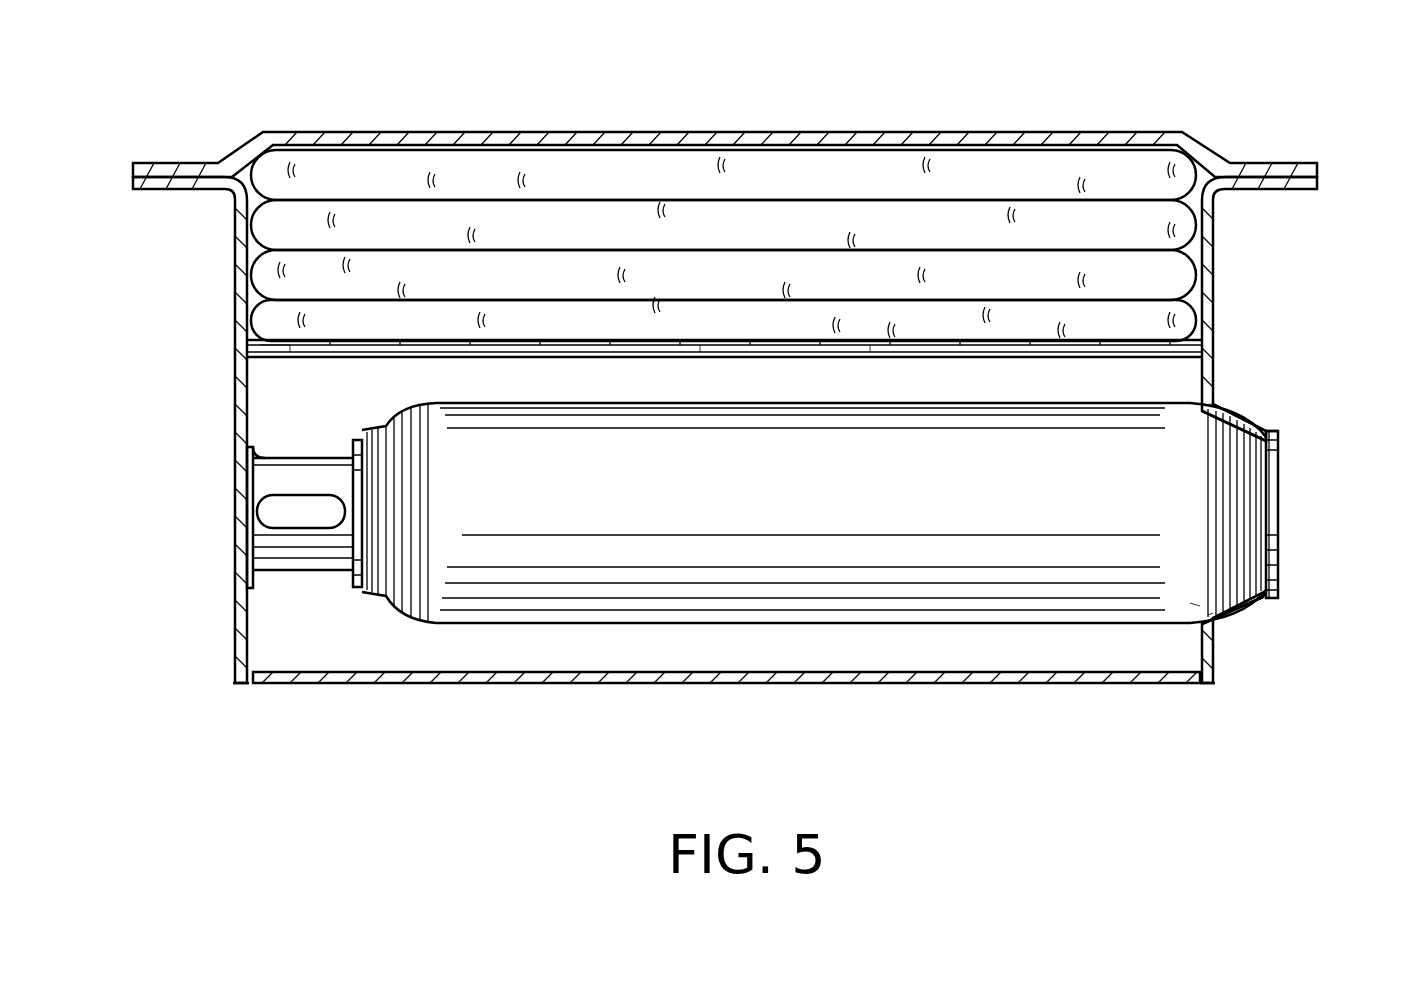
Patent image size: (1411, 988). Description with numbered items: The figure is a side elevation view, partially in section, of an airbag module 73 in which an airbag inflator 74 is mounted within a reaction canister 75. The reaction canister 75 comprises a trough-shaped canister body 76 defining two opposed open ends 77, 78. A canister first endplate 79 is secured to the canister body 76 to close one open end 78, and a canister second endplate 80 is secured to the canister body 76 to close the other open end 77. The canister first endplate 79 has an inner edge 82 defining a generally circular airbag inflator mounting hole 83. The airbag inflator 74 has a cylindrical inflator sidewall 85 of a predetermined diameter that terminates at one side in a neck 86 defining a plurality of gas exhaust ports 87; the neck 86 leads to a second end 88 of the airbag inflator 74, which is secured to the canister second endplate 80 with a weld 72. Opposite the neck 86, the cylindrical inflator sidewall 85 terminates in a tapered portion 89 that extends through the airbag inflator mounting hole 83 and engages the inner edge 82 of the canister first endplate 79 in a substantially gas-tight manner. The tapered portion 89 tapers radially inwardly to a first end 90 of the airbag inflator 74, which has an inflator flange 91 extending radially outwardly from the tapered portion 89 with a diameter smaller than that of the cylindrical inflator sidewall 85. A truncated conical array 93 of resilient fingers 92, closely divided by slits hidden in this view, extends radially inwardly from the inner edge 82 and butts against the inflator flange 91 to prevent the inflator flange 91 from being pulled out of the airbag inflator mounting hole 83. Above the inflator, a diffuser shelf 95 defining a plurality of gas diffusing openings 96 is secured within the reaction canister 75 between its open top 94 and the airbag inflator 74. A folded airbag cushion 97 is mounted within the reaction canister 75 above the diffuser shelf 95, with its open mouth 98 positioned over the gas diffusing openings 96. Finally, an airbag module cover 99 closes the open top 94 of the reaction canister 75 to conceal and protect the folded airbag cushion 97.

The weld 72 is at (262, 447).
The airbag module 73 is at (685, 110).
The airbag inflator 74 is at (520, 633).
The reaction canister 75 is at (1218, 276).
The canister body 76 is at (855, 684).
The open end 77 is at (236, 674).
The open end 78 is at (1215, 684).
The canister first endplate 79 is at (1214, 366).
The canister second endplate 80 is at (235, 627).
The inner edge 82 is at (1210, 614).
The airbag inflator mounting hole 83 is at (1193, 600).
The cylindrical inflator sidewall 85 is at (713, 624).
The neck 86 is at (345, 572).
The gas exhaust ports 87 is at (283, 503).
The second end 88 is at (235, 537).
The tapered portion 89 is at (1200, 407).
The first end 90 is at (1280, 512).
The inflator flange 91 is at (1276, 430).
The resilient fingers 92 is at (1228, 418).
The truncated conical array 93 is at (1258, 611).
The open top 94 is at (1202, 190).
The diffuser shelf 95 is at (593, 358).
The gas diffusing openings 96 is at (456, 360).
The folded airbag cushion 97 is at (887, 320).
The open mouth 98 is at (720, 340).
The airbag module cover 99 is at (893, 138).